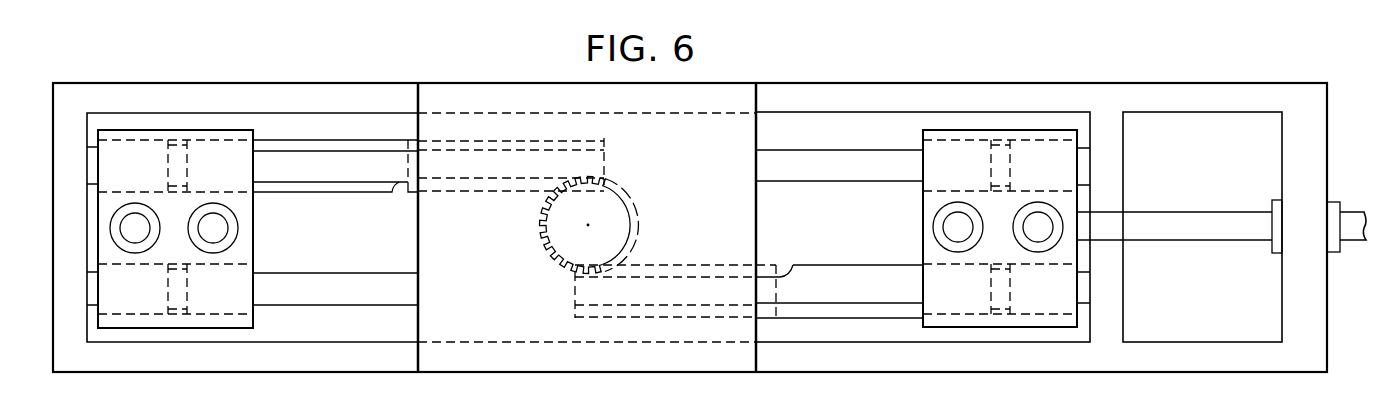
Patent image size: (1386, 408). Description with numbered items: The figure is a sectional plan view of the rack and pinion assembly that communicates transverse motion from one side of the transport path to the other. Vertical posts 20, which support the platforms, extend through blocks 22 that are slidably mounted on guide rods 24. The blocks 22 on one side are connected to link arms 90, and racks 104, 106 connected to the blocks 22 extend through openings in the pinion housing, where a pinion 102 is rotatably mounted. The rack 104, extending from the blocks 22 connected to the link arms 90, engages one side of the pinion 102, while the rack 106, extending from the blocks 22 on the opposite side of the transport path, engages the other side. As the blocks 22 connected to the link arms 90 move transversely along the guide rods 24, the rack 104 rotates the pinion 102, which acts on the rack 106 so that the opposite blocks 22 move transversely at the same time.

The vertical posts 20 is at (142, 227).
The blocks 22 is at (244, 134).
The guide rods 24 is at (360, 290).
The link arms 90 is at (1220, 227).
The pinion 102 is at (568, 213).
The rack 104 is at (705, 278).
The rack 106 is at (510, 172).